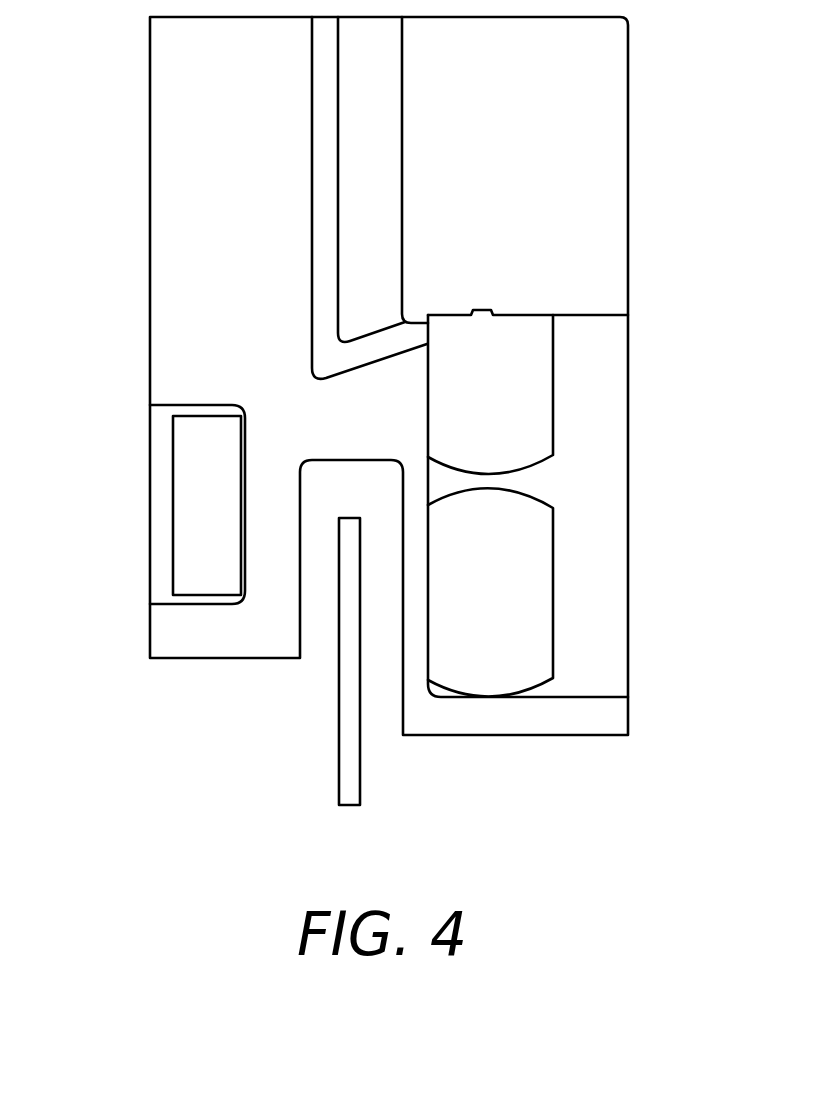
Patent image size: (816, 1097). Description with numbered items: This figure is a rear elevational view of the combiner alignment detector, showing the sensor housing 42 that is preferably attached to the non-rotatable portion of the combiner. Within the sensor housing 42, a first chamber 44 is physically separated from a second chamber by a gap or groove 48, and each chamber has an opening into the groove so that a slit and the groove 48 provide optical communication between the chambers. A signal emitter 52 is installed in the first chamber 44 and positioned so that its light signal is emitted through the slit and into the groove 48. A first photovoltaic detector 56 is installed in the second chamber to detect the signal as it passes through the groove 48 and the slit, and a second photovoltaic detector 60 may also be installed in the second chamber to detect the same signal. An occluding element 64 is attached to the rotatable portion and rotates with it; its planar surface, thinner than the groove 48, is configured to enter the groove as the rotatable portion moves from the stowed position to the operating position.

The sensor housing 42 is at (200, 302).
The first chamber 44 is at (170, 600).
The groove 48 is at (303, 638).
The signal emitter 52 is at (197, 530).
The first photovoltaic detector 56 is at (510, 628).
The second photovoltaic detector 60 is at (518, 400).
The occluding element 64 is at (363, 748).